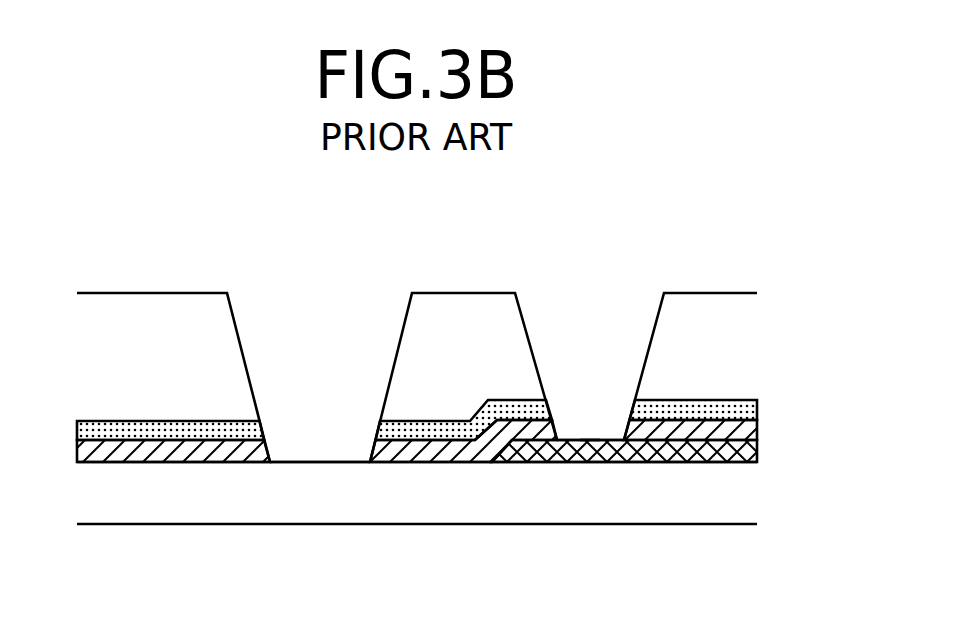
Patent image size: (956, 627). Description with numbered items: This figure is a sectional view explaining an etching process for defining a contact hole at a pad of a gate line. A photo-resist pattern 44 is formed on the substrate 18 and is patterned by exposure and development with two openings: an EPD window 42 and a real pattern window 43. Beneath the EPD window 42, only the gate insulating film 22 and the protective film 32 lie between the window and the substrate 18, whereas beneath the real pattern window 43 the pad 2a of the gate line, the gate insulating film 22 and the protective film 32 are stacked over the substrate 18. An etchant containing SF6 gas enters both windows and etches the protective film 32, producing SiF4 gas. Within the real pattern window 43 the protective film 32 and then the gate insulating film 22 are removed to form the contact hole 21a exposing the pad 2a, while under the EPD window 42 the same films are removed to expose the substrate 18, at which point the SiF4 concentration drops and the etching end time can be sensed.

The substrate 18 is at (665, 488).
The pad of the gate line 2a is at (540, 462).
The gate insulating film 22 is at (440, 462).
The protective film 32 is at (223, 430).
The EPD window 42 is at (298, 337).
The real pattern window 43 is at (551, 333).
The photo-resist pattern 44 is at (692, 298).
The contact hole 21a is at (610, 393).